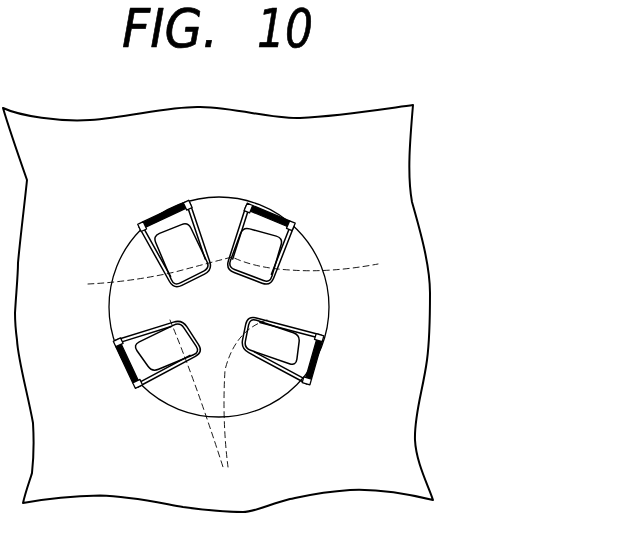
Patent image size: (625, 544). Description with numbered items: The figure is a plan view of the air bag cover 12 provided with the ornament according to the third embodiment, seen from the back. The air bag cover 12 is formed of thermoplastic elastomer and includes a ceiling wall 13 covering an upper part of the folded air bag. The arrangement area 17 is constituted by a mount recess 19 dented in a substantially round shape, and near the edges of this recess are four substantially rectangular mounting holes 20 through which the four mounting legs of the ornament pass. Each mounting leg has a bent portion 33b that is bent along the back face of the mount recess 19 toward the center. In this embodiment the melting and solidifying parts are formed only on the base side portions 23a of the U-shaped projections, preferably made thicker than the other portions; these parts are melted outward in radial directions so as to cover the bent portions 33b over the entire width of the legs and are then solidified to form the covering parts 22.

The air bag cover 12 is at (228, 275).
The ceiling wall 13 is at (383, 118).
The arrangement area 17 is at (273, 308).
The mount recess 19 is at (332, 308).
The mounting hole 20 is at (140, 226).
The covering part 22 is at (253, 250).
The base side portion 23a is at (232, 374).
The bent portion 33b is at (163, 222).